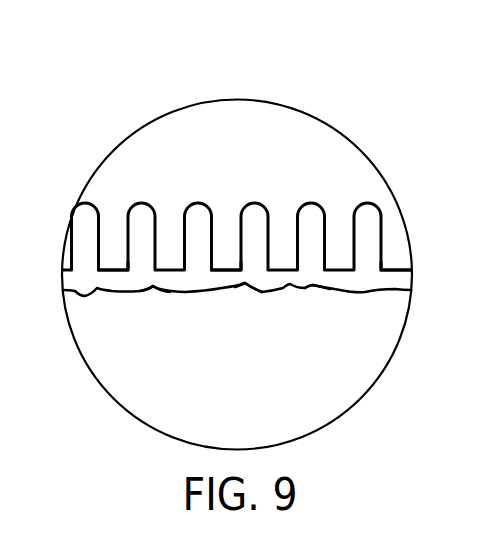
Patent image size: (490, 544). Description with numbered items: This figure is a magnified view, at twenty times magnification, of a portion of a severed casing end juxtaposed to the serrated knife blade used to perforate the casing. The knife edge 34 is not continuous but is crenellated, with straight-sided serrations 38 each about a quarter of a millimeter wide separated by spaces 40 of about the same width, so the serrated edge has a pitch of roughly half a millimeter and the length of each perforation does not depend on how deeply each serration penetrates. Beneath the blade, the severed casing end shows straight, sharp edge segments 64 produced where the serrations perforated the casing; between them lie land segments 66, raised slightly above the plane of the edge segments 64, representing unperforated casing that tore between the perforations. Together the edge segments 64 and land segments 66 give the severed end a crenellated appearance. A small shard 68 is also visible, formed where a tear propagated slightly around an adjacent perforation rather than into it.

The knife edge 34 is at (355, 167).
The serrations 38 is at (223, 227).
The space between serrations 40 is at (255, 223).
The straight, sharp edge segments 64 is at (111, 283).
The land segments 66 is at (153, 287).
The shard 68 is at (250, 284).